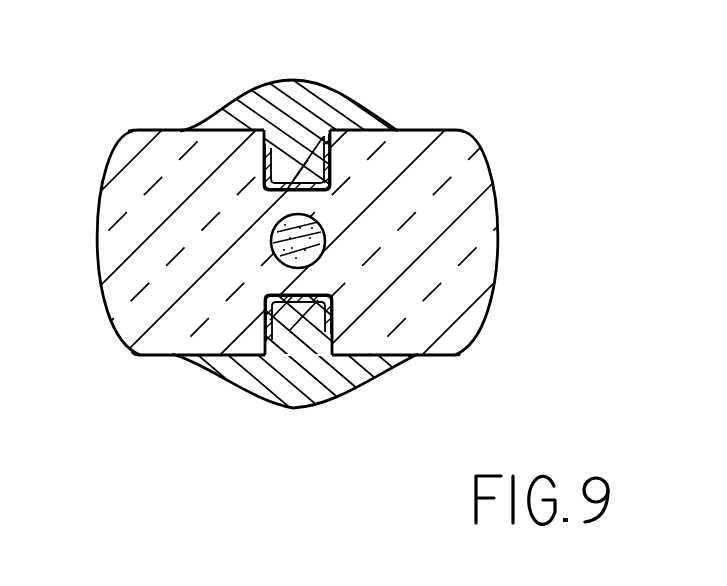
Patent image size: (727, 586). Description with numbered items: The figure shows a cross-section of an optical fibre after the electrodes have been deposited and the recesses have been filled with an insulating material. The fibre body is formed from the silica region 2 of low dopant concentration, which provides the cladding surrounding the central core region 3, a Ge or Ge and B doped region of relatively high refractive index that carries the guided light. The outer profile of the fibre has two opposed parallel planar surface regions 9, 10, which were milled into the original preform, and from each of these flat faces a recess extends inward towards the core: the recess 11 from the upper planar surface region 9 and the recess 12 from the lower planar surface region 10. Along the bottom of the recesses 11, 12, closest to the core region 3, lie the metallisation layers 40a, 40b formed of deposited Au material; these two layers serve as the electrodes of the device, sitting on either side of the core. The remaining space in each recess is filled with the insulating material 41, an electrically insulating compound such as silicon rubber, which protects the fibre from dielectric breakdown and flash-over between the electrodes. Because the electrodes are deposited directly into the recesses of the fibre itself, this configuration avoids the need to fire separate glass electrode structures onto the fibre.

The region with a low dopant concentration 2 is at (503, 259).
The core region 3 is at (272, 243).
The planar surface region 9 is at (133, 130).
The planar surface region 10 is at (150, 356).
The recess region 11 is at (273, 150).
The recess region 12 is at (273, 303).
The metallisation layer 40a is at (328, 122).
The metallisation layer 40b is at (277, 302).
The insulating material 41 is at (311, 99).